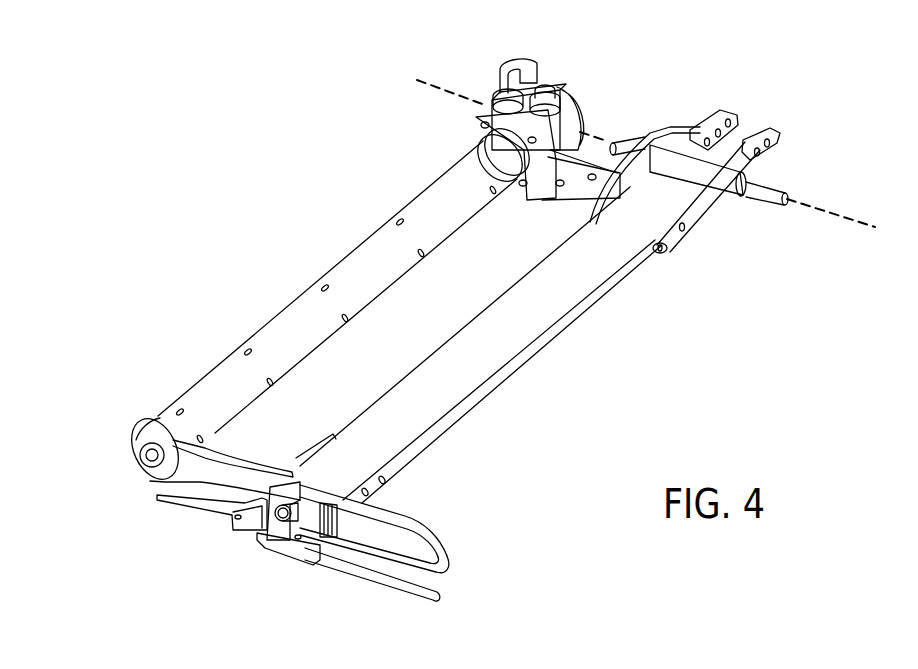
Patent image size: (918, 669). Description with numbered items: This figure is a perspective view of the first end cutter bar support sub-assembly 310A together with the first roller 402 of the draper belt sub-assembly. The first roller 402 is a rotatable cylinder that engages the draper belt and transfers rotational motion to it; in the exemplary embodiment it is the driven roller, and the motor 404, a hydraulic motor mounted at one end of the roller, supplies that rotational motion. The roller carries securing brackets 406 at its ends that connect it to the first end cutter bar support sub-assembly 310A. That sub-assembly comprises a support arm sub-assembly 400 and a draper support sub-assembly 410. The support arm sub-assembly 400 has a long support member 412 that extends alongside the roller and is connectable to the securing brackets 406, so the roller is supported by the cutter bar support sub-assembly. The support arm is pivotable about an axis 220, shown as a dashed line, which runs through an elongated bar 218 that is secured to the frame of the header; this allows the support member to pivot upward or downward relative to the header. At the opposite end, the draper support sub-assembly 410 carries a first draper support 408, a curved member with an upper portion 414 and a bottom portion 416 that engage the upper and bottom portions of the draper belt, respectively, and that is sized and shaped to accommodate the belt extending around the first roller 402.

The first end cutter bar support sub-assembly 310A is at (583, 396).
The support arm sub-assembly 400 is at (585, 280).
The first roller 402 is at (303, 293).
The motor 404 is at (553, 88).
The securing brackets 406 is at (203, 466).
The first draper support 408 is at (427, 561).
The draper support sub-assembly 410 is at (295, 588).
The support member 412 is at (513, 333).
The upper portion 414 is at (400, 514).
The bottom portion 416 is at (353, 560).
The elongated bar 218 is at (634, 128).
The axis 220 is at (448, 93).